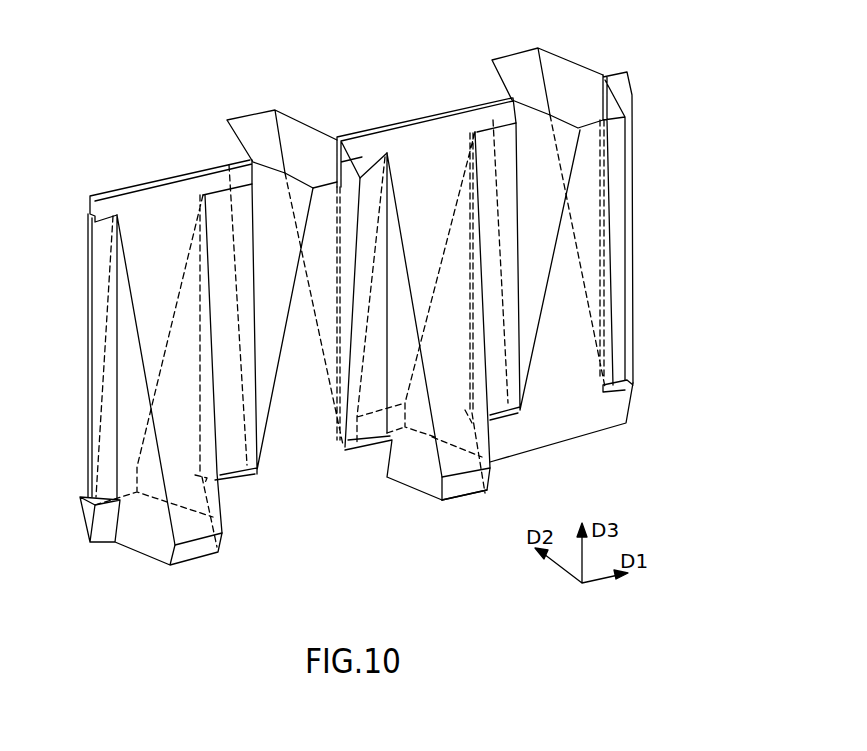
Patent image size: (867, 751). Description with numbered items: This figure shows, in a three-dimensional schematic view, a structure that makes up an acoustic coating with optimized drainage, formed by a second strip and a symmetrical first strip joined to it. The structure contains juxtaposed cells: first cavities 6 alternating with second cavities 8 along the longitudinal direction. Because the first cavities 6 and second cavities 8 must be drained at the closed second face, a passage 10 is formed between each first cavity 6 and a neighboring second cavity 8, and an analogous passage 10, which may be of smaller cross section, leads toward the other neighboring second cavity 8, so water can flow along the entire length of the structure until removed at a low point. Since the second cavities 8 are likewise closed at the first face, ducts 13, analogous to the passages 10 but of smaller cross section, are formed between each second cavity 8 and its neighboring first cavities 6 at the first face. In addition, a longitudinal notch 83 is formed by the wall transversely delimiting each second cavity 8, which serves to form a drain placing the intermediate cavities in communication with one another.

The first cavity 6 is at (297, 143).
The second cavity 8 is at (148, 537).
The passage 10 is at (237, 493).
The duct 13 is at (368, 145).
The longitudinal notch 83 is at (473, 497).